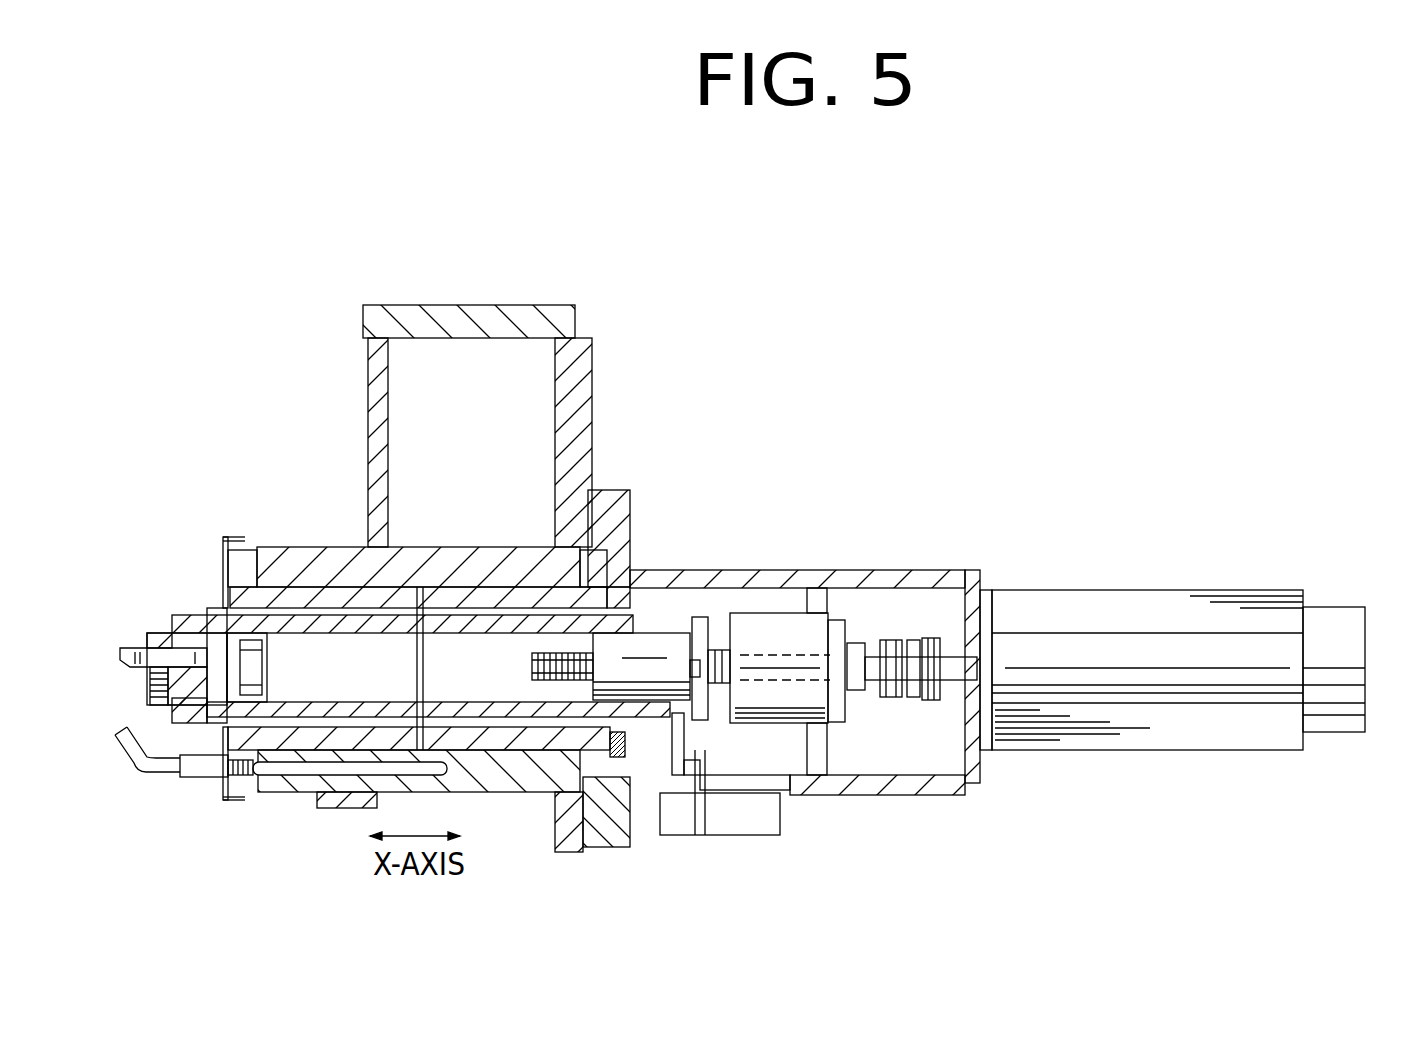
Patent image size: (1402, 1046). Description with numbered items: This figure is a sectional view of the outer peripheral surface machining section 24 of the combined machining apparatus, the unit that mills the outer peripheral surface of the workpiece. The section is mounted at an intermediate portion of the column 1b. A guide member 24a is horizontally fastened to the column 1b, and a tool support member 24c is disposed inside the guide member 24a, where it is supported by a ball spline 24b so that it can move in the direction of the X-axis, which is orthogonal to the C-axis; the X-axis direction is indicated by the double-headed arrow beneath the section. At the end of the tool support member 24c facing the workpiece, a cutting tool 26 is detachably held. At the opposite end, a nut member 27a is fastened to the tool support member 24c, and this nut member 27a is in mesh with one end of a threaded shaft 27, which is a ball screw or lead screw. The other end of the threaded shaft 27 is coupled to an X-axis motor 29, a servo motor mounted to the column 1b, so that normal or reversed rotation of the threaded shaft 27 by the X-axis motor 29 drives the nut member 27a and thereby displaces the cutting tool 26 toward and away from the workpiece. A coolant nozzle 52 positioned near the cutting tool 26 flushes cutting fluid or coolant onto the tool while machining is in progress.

The column 1b is at (577, 390).
The outer peripheral surface machining section 24 is at (768, 560).
The guide member 24a is at (540, 557).
The ball spline 24b is at (473, 597).
The tool support member 24c is at (442, 587).
The cutting tool 26 is at (135, 643).
The threaded shaft 27 is at (877, 660).
The nut member 27a is at (685, 632).
The X-axis motor 29 is at (1074, 600).
The coolant nozzle 52 is at (128, 757).